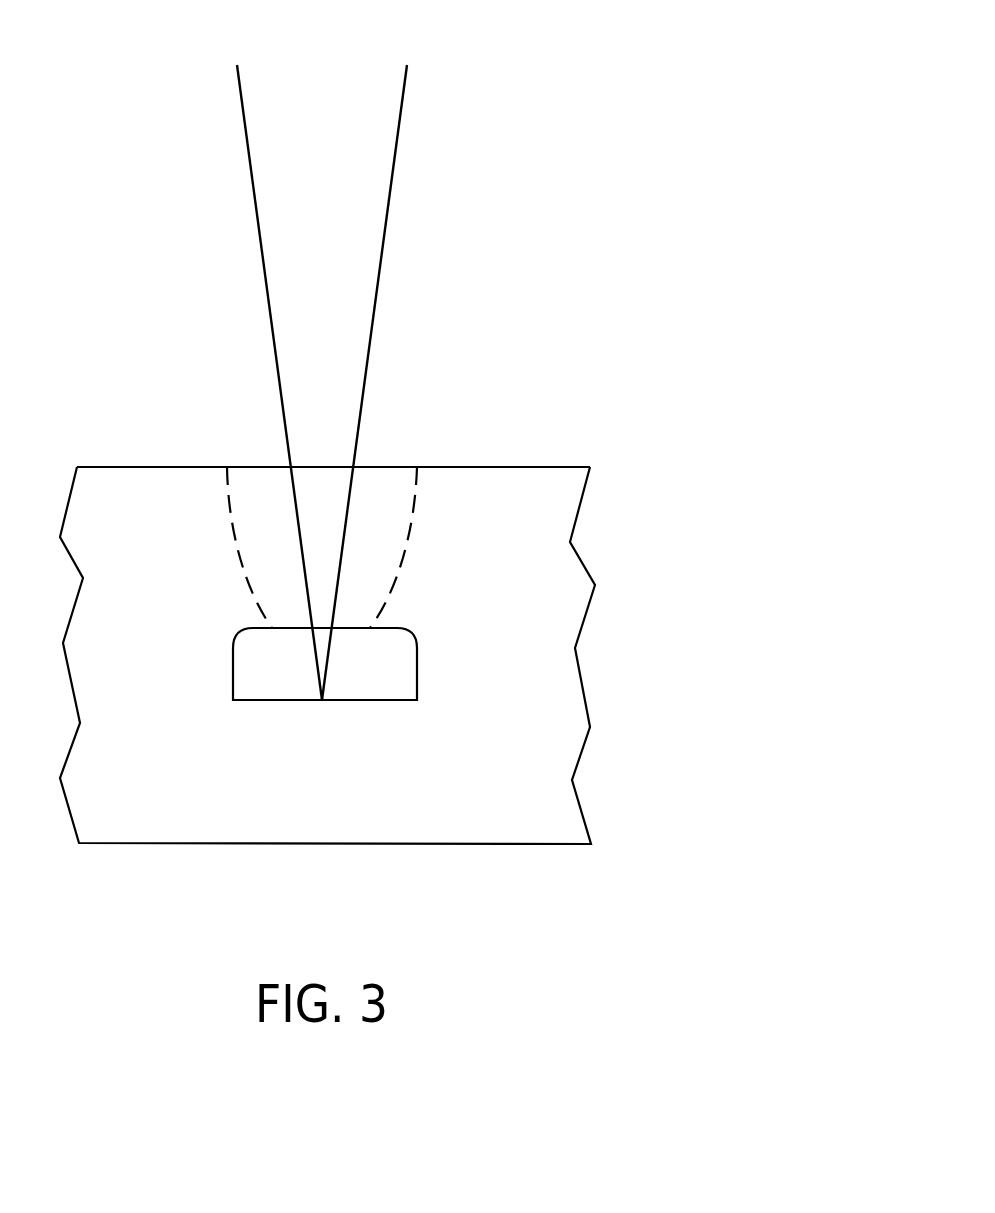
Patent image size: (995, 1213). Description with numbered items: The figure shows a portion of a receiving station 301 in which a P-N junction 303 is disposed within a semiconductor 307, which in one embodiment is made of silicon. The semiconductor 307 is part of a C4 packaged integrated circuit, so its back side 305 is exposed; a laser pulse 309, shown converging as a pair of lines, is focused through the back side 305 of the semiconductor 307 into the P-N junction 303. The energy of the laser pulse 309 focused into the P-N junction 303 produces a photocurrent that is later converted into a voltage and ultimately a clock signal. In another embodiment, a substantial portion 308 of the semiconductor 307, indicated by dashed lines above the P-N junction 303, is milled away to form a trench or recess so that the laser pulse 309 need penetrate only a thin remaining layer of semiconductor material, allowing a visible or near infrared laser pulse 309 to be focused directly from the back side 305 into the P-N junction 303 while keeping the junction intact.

The receiving station 301 is at (570, 110).
The P-N junction 303 is at (412, 638).
The back side 305 is at (538, 467).
The semiconductor 307 is at (570, 715).
The portion of semiconductor 308 is at (227, 517).
The laser pulse 309 is at (373, 315).